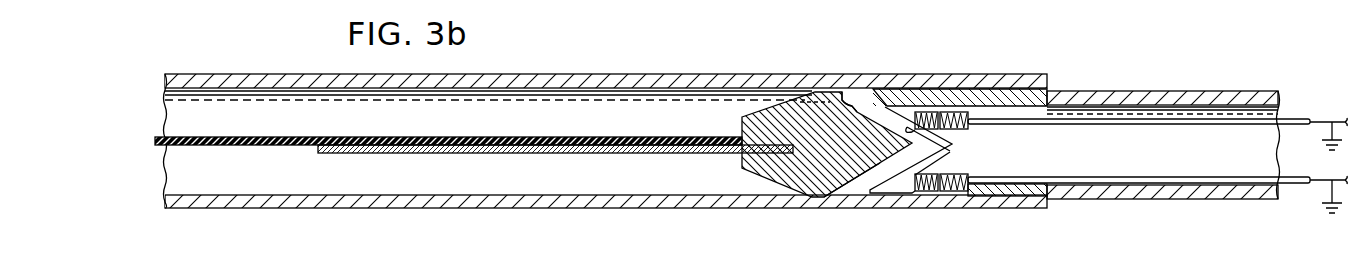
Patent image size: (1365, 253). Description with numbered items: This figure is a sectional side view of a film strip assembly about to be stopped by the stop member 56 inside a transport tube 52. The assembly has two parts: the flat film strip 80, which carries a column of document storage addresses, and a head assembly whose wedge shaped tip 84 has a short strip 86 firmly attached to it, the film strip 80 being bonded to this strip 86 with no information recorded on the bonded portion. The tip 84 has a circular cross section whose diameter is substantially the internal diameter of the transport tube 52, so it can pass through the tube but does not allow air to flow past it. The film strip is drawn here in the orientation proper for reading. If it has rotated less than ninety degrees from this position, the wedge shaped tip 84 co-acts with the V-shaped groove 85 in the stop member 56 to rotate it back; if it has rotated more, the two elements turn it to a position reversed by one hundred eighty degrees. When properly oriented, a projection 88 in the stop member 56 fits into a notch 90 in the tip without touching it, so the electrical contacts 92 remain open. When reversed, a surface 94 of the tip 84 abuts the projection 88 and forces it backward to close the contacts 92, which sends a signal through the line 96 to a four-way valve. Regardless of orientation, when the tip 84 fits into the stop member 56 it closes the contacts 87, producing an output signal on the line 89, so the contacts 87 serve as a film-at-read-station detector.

The transport tube 52 is at (633, 78).
The stop member 56 is at (1225, 94).
The film strip 80 is at (245, 144).
The short strip 86 is at (472, 153).
The wedge shaped tip 84 is at (795, 178).
The notch 90 is at (858, 110).
The surface 94 is at (853, 183).
The electrical contacts 92 is at (937, 119).
The projection 88 is at (945, 128).
The V-shaped groove 85 is at (927, 156).
The contacts 87 is at (902, 188).
The line 96 is at (1298, 120).
The line 89 is at (1300, 188).